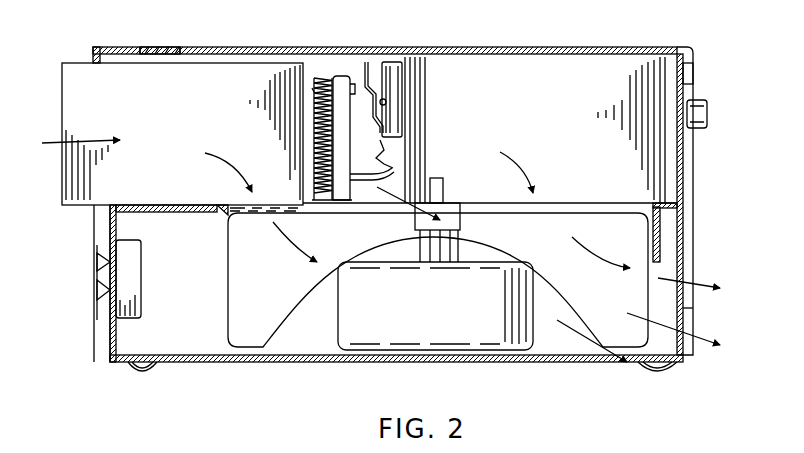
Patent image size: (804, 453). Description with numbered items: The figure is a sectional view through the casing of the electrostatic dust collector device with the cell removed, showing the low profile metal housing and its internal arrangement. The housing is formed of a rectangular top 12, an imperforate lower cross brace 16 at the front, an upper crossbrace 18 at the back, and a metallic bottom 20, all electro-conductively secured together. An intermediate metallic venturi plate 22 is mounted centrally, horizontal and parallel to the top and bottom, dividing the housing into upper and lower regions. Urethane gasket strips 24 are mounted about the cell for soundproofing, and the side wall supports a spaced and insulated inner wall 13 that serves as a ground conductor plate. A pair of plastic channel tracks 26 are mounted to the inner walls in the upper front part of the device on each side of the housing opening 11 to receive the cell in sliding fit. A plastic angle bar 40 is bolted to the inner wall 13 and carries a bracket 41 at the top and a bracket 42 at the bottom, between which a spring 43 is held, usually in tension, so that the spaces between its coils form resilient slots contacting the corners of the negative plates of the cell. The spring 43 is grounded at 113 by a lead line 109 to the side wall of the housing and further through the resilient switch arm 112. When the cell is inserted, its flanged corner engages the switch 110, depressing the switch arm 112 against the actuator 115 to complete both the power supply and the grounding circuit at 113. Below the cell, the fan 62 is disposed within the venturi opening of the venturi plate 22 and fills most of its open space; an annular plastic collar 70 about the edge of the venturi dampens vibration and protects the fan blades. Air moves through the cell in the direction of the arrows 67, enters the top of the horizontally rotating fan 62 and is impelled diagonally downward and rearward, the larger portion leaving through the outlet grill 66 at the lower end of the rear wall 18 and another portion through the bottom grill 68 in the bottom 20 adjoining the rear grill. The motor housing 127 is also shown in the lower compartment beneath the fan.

The housing opening 11 is at (62, 104).
The rectangular top 12 is at (583, 47).
The inner wall 13 is at (198, 320).
The lower cross brace 16 is at (110, 334).
The upper crossbrace 18 is at (686, 82).
The bottom 20 is at (305, 362).
The venturi plate 22 is at (193, 213).
The urethane gasket strips 24 is at (165, 54).
The plastic channel tracks 26 is at (182, 149).
The plastic angle bar 40 is at (335, 148).
The bracket 41 is at (321, 76).
The bracket 42 is at (328, 201).
The spring 43 is at (313, 91).
The fan 62 is at (622, 304).
The outlet grill 66 is at (697, 312).
The arrows 67 is at (518, 168).
The bottom grill 68 is at (641, 364).
The annular plastic collar 70 is at (661, 245).
The lead line 109 is at (376, 175).
The switch 110 is at (394, 107).
The switch arm 112 is at (375, 60).
The grounding circuit 113 is at (393, 170).
The actuator 115 is at (385, 100).
The motor housing 127 is at (490, 352).